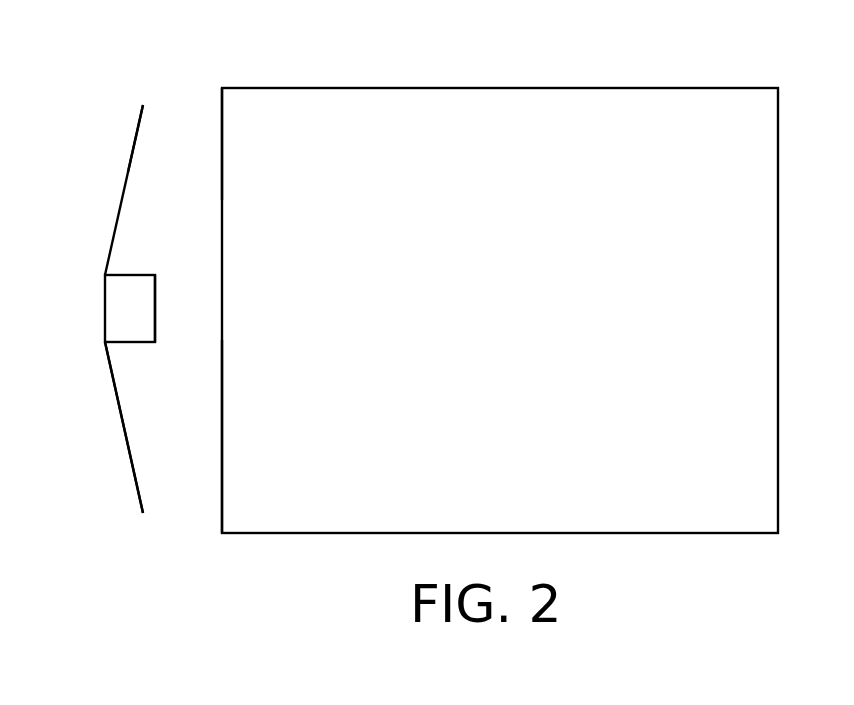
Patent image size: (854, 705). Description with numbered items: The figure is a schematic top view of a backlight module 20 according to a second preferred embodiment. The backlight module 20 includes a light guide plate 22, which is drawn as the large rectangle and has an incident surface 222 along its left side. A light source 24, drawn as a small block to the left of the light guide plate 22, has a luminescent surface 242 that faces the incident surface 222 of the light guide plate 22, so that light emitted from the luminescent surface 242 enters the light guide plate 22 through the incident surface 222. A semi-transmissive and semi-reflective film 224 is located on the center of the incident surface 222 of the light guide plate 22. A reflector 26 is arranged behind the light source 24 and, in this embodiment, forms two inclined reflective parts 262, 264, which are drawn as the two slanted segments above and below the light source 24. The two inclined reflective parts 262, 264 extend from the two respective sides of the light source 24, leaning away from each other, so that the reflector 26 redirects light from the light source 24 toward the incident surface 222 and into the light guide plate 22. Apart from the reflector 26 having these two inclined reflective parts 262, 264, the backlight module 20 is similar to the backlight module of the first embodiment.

The backlight module 20 is at (408, 51).
The light guide plate 22 is at (586, 80).
The incident surface 222 is at (216, 109).
The semi-transmissive and semi-reflective film 224 is at (216, 412).
The light source 24 is at (133, 303).
The luminescent surface 242 is at (163, 284).
The reflector 26 is at (118, 184).
The inclined reflective part 262 is at (137, 131).
The inclined reflective part 264 is at (115, 392).